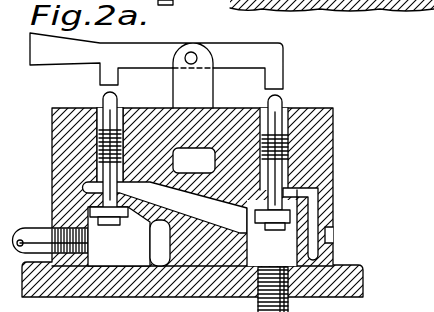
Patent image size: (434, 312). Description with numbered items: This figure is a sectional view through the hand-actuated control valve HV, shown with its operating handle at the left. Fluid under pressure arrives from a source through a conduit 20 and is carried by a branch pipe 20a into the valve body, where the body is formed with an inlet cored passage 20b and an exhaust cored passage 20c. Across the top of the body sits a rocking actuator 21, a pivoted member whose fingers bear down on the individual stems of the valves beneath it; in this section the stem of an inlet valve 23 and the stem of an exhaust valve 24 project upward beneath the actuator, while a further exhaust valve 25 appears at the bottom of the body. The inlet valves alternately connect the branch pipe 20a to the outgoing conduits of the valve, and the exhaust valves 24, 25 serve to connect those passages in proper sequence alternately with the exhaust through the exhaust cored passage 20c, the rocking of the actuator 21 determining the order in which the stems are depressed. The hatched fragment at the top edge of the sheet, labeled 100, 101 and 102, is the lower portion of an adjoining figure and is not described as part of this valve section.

The conduit 20 is at (192, 202).
The branch pipe 20a is at (27, 232).
The inlet cored passage 20b is at (117, 250).
The exhaust cored passage 20c is at (201, 156).
The rocking actuator 21 is at (284, 72).
The inlet valve 23 is at (104, 98).
The exhaust valve 24 is at (284, 105).
The exhaust valve 25 is at (290, 309).
The block 100 is at (296, 16).
The block 101 is at (319, 26).
The block 102 is at (389, 25).